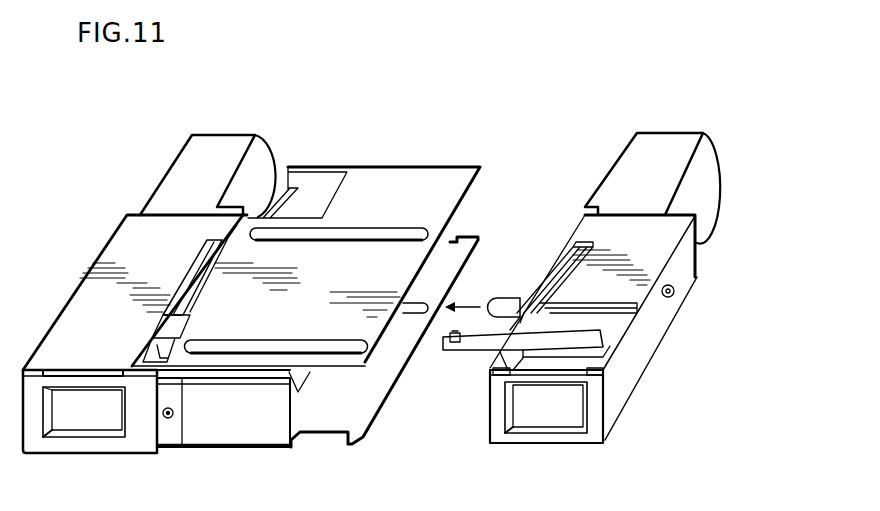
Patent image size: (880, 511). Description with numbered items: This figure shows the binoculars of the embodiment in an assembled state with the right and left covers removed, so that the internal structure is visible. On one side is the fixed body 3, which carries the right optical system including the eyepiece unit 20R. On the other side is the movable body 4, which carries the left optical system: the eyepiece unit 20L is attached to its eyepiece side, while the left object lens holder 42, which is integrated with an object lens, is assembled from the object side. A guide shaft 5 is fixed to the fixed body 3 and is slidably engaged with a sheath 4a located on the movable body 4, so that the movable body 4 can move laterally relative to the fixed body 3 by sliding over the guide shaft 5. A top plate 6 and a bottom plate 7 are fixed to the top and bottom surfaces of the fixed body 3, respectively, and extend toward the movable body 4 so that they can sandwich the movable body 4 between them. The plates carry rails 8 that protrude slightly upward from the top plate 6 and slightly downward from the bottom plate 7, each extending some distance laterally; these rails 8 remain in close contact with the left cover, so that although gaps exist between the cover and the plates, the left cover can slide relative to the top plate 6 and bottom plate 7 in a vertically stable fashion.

The fixed body 3 is at (72, 316).
The movable body 4 is at (625, 367).
The sheath 4a is at (518, 307).
The guide shaft 5 is at (422, 303).
The top plate 6 is at (384, 183).
The bottom plate 7 is at (368, 405).
The rails 8 is at (417, 232).
The right eyepiece unit 20R is at (181, 187).
The left eyepiece unit 20L is at (705, 183).
The left object lens holder 42 is at (583, 345).